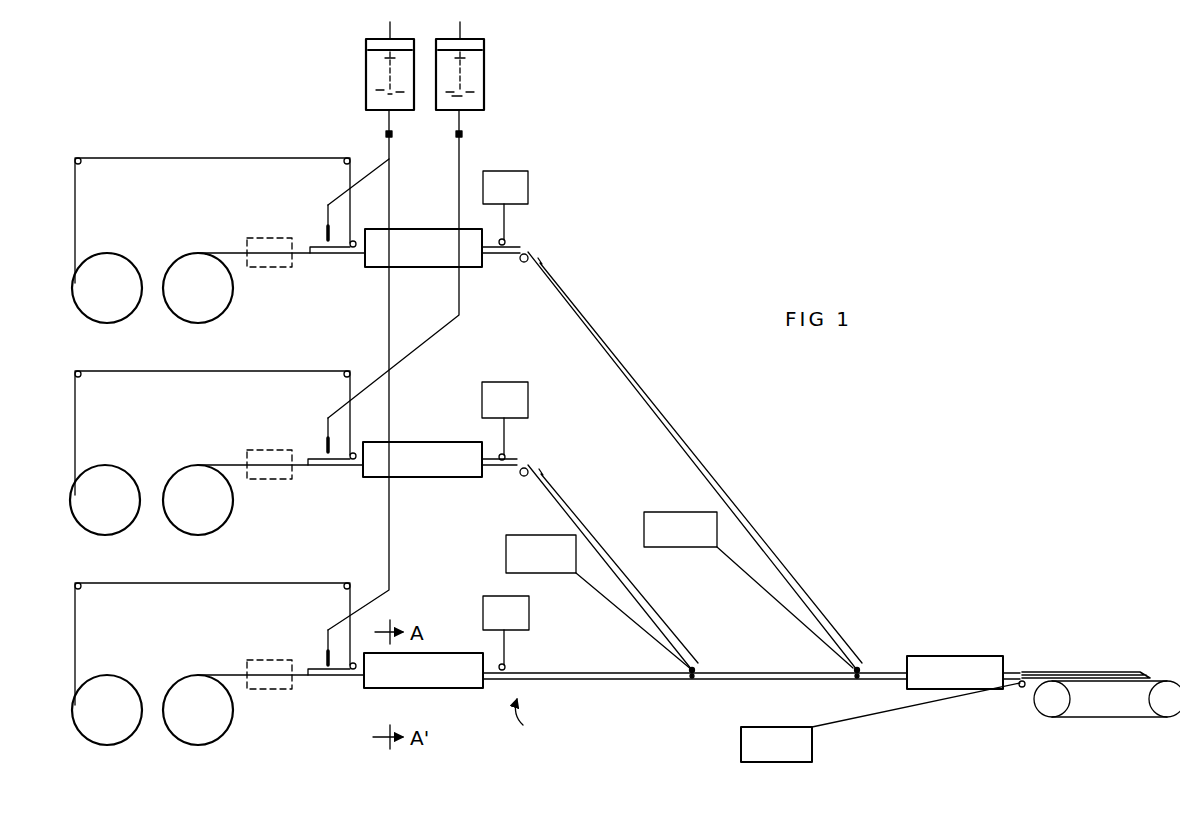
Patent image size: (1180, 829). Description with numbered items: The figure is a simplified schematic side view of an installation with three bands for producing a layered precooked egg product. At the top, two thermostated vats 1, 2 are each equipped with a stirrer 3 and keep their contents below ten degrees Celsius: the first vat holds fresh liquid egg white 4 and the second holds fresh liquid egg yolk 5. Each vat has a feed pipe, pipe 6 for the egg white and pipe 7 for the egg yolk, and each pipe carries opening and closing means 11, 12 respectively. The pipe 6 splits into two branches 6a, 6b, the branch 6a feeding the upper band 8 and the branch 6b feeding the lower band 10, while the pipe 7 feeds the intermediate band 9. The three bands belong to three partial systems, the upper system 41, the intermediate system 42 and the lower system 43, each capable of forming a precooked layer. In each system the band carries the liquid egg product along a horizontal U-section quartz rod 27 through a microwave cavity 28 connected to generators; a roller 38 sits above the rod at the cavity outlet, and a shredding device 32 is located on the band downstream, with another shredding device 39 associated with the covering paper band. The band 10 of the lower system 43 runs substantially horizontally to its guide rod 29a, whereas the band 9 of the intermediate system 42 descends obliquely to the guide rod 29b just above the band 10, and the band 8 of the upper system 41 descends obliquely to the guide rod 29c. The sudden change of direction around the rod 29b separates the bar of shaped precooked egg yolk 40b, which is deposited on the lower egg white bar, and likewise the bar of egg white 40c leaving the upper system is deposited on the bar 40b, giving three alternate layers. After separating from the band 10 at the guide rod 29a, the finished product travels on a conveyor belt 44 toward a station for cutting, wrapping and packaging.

The vat 1 is at (365, 63).
The vat 2 is at (486, 63).
The stirrer 3 is at (453, 98).
The fresh liquid egg white 4 is at (372, 80).
The fresh liquid egg yolk 5 is at (474, 82).
The pipe 6 is at (386, 116).
The branch 6a is at (328, 200).
The branch 6b is at (386, 520).
The pipe 7 is at (455, 322).
The upper band 8 is at (232, 253).
The intermediate band 9 is at (230, 465).
The lower band 10 is at (232, 675).
The opening and closing means 11 is at (393, 134).
The opening and closing means 12 is at (463, 132).
The quartz rod 27 is at (572, 672).
The microwave cavity 28 is at (438, 688).
The guide rod 29a is at (1021, 688).
The guide rod 29b is at (692, 681).
The guide rod 29c is at (855, 681).
The shredding device 32 is at (667, 520).
The roller 38 is at (200, 583).
The shredding device 39 is at (490, 612).
The bar of shaped precooked egg yolk 40b is at (734, 630).
The bar of egg white 40c is at (898, 630).
The upper system 41 is at (570, 250).
The intermediate system 42 is at (563, 443).
The lower system 43 is at (538, 724).
The conveyor belt 44 is at (1113, 716).